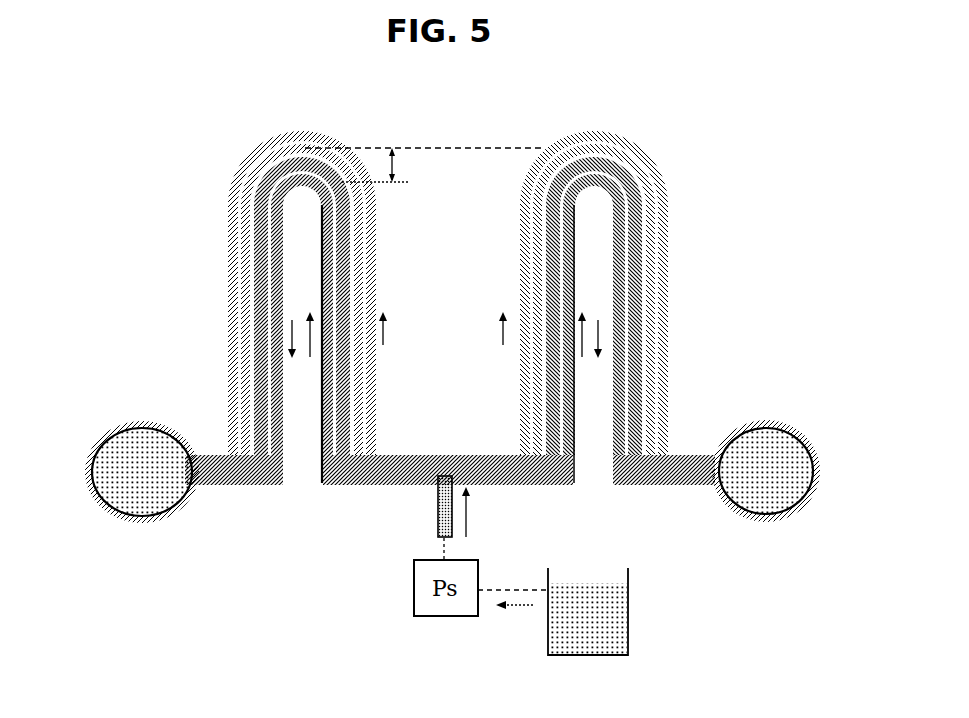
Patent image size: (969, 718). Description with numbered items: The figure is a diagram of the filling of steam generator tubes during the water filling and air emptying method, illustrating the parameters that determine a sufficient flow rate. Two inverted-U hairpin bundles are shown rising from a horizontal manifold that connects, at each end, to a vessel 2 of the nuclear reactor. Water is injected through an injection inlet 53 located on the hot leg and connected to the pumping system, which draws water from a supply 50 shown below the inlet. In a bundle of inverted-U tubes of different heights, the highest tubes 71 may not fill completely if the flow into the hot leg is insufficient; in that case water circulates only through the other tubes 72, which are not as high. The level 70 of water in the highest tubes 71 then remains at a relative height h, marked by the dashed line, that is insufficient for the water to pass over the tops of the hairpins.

The vessel 2 is at (146, 410).
The liquid reservoir 50 is at (541, 554).
The injection inlet 53 is at (437, 515).
The level of water 70 is at (448, 147).
The highest tubes 71 is at (370, 257).
The other tubes 72 is at (272, 265).